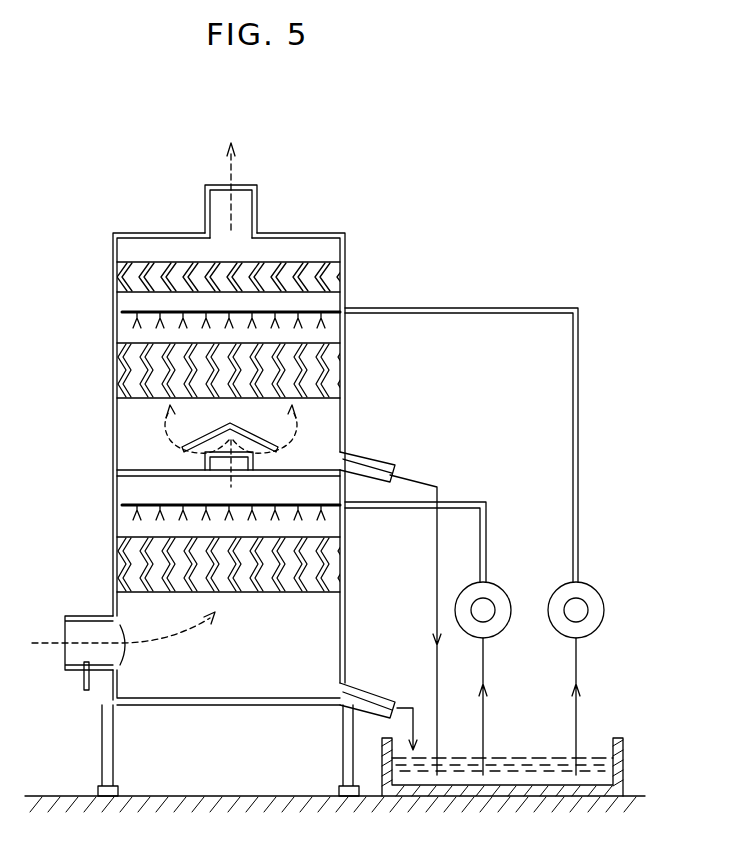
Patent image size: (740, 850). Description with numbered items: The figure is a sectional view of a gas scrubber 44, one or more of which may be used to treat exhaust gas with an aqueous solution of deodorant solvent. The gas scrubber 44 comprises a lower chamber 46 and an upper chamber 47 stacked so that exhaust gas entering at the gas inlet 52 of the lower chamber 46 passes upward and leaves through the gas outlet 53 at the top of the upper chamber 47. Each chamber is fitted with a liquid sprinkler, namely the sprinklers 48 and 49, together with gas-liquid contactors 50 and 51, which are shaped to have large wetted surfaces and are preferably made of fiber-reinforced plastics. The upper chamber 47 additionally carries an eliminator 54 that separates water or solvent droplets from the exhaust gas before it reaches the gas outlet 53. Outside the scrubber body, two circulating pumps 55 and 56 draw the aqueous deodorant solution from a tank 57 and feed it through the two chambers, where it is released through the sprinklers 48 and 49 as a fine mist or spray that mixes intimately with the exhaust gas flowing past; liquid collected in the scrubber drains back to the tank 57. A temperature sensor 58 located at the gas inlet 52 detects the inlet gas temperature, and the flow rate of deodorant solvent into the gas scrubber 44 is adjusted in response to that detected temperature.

The gas scrubber 44 is at (389, 186).
The lower chamber 46 is at (259, 666).
The upper chamber 47 is at (334, 444).
The liquid sprinkler 48 is at (130, 512).
The liquid sprinkler 49 is at (130, 320).
The gas-liquid contactor 50 is at (300, 592).
The gas-liquid contactor 51 is at (137, 400).
The gas inlet 52 is at (58, 660).
The gas outlet 53 is at (208, 185).
The eliminator 54 is at (150, 262).
The circulating pump 55 is at (495, 583).
The circulating pump 56 is at (590, 583).
The tank 57 is at (625, 760).
The temperature sensor 58 is at (80, 688).